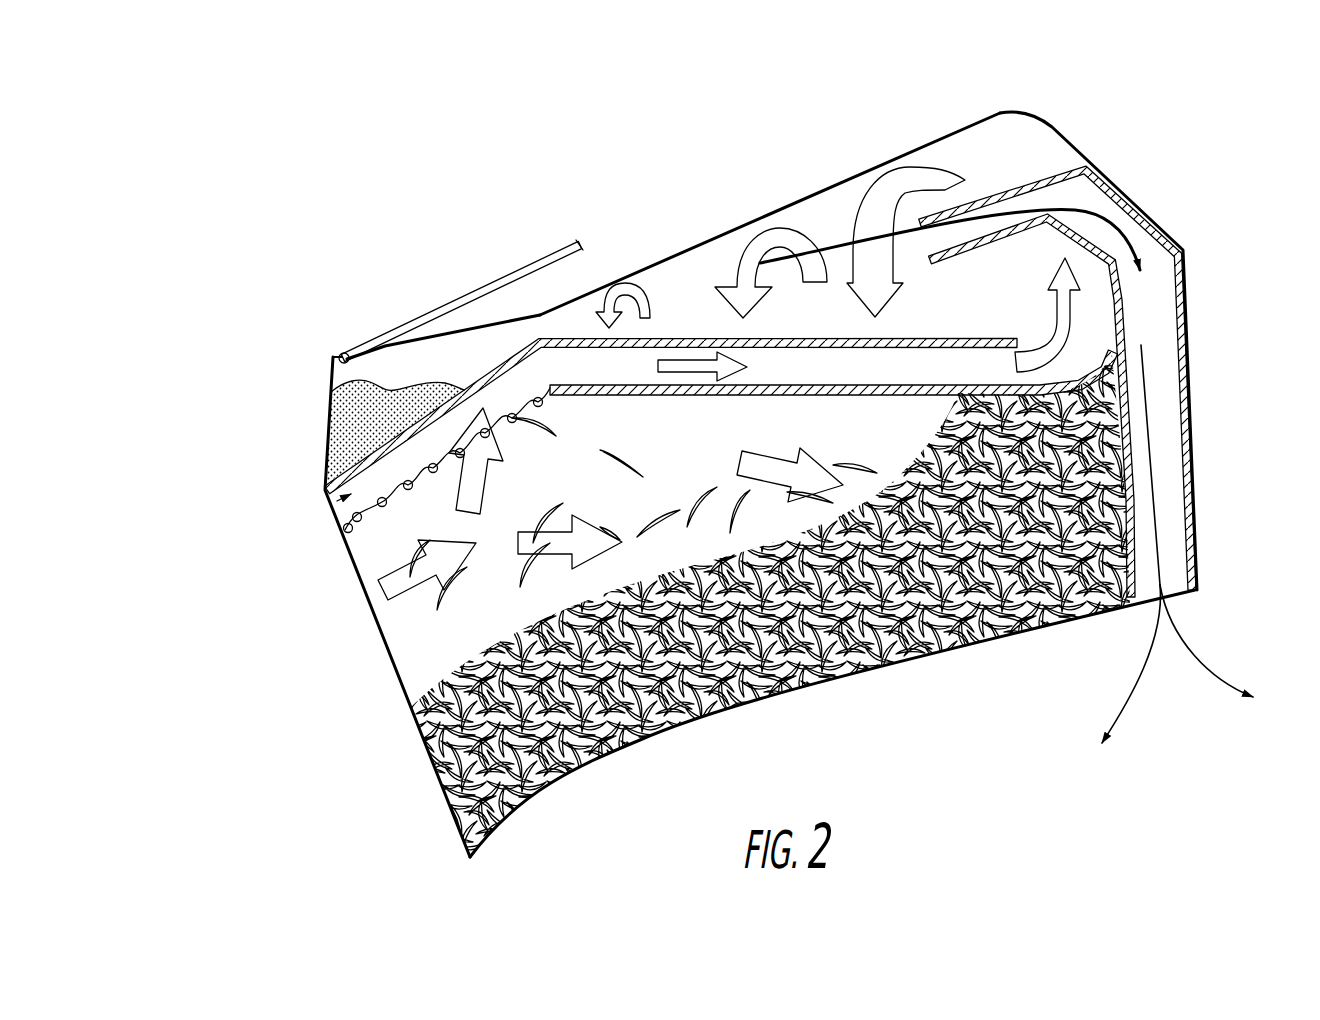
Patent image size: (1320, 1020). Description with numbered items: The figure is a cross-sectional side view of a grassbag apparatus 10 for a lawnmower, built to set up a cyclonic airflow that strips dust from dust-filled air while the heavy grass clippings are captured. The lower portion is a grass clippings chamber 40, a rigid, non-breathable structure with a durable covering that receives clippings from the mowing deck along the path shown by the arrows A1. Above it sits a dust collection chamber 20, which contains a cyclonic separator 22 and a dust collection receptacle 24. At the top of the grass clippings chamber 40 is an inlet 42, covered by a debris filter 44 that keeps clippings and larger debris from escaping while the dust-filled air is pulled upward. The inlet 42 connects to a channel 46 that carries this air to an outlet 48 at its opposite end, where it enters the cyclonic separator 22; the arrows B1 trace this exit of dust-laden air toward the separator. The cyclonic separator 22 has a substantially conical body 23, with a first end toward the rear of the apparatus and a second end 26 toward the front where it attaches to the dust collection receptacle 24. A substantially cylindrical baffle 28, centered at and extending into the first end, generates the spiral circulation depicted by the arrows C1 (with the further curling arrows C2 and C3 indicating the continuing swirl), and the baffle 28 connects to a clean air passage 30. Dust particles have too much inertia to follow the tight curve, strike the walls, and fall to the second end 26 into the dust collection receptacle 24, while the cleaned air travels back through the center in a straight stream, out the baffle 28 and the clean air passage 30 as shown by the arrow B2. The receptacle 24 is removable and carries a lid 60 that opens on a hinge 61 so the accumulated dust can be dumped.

The grassbag apparatus 10 is at (163, 252).
The dust collection chamber 20 is at (638, 203).
The cyclonic separator 22 is at (864, 190).
The body 23 is at (737, 227).
The dust collection receptacle 24 is at (335, 378).
The second end 26 is at (537, 300).
The baffle 28 is at (990, 193).
The clean air passage 30 is at (1165, 415).
The grass clippings chamber 40 is at (388, 712).
The inlet 42 is at (327, 503).
The debris filter 44 is at (382, 512).
The channel 46 is at (627, 375).
The outlet 48 is at (1085, 334).
The lid 60 is at (388, 338).
The hinge 61 is at (341, 352).
The airflow arrows A1 is at (610, 504).
The dust-filled air path arrows B1 is at (950, 239).
The exhaust air arrow B2 is at (1175, 682).
The cyclonic airflow arrows C1 is at (906, 247).
The recirculating air flow C2 is at (771, 277).
The recirculating air flow C3 is at (624, 312).